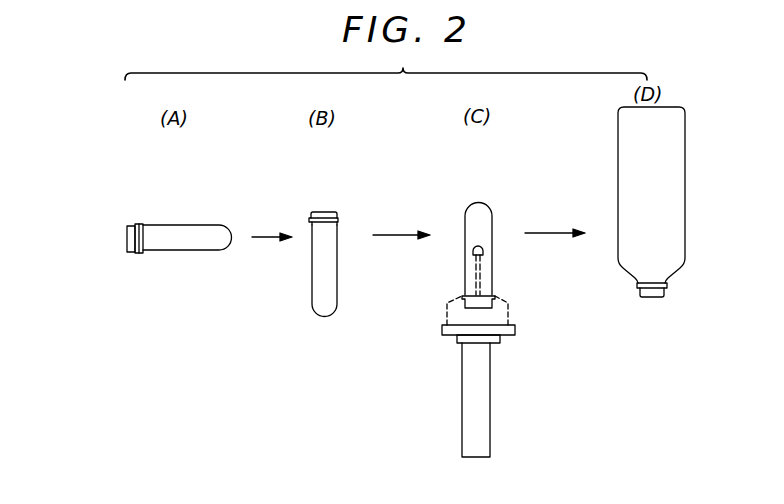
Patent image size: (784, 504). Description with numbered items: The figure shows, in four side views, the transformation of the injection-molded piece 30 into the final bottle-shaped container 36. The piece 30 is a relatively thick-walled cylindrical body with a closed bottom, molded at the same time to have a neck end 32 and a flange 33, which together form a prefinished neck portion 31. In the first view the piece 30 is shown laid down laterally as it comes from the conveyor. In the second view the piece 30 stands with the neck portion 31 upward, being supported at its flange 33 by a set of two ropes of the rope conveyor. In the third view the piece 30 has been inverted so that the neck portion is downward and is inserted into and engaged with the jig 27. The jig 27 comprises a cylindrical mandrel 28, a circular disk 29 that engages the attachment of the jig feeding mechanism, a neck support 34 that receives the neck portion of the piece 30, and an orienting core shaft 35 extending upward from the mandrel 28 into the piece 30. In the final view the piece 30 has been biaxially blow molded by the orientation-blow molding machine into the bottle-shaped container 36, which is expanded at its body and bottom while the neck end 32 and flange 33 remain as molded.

The jig 27 is at (443, 315).
The cylindrical mandrel 28 is at (490, 400).
The circular disk 29 is at (515, 331).
The piece 30 is at (170, 227).
The prefinished neck portion 31 is at (82, 192).
The neck end 32 is at (128, 236).
The flange 33 is at (142, 228).
The neck support 34 is at (508, 305).
The orienting core shaft 35 is at (483, 263).
The bottle-shaped container 36 is at (685, 197).